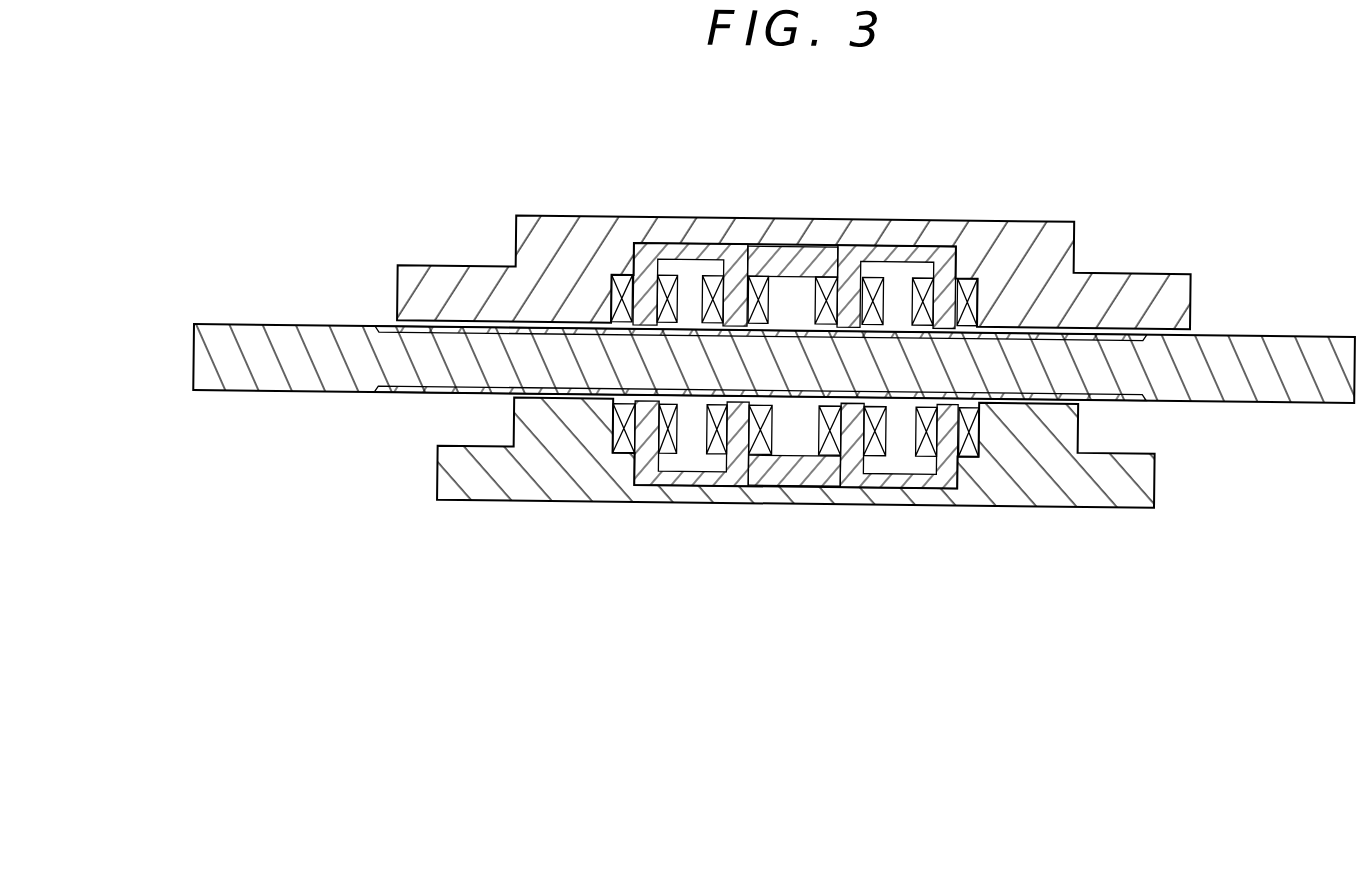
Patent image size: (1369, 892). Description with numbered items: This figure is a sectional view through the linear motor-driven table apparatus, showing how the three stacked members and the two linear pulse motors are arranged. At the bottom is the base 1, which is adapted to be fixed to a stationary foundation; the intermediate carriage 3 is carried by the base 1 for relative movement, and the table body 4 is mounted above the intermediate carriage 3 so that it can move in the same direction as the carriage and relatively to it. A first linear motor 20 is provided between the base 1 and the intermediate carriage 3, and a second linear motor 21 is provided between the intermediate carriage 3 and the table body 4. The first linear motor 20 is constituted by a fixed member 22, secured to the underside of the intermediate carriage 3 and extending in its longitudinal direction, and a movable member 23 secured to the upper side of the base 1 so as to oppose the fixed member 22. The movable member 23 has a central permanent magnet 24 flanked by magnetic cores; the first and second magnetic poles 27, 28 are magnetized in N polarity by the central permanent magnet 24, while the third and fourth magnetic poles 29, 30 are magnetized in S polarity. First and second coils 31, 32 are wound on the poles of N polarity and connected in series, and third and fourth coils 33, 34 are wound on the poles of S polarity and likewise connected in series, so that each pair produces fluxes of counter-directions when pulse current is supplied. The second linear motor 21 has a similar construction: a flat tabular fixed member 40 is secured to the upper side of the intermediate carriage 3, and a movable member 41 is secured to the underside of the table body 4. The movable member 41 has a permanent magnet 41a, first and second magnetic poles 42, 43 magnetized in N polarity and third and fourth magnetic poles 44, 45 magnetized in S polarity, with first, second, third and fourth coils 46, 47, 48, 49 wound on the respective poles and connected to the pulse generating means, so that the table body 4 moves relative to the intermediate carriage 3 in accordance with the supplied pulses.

The base 1 is at (1158, 472).
The intermediate carriage 3 is at (1287, 328).
The table body 4 is at (1020, 226).
The first linear motor 20 is at (595, 451).
The second linear motor 21 is at (595, 302).
The fixed member 22 is at (423, 388).
The fixed member 40 is at (391, 321).
The movable member 23 is at (1060, 578).
The movable member 41 is at (586, 140).
The permanent magnet 41a is at (800, 255).
The first magnetic pole 42 is at (614, 288).
The second magnetic pole 43 is at (667, 295).
The third magnetic pole 44 is at (897, 290).
The fourth magnetic pole 45 is at (967, 295).
The first coil 46 is at (735, 300).
The second coil 47 is at (758, 295).
The third coil 48 is at (945, 300).
The fourth coil 49 is at (922, 295).
The central permanent magnet 24 is at (810, 470).
The first magnetic pole 27 is at (625, 425).
The second magnetic pole 28 is at (760, 425).
The third magnetic pole 29 is at (900, 440).
The fourth magnetic pole 30 is at (970, 425).
The first coil 31 is at (738, 440).
The second coil 32 is at (718, 425).
The third coil 33 is at (948, 440).
The fourth coil 34 is at (928, 425).